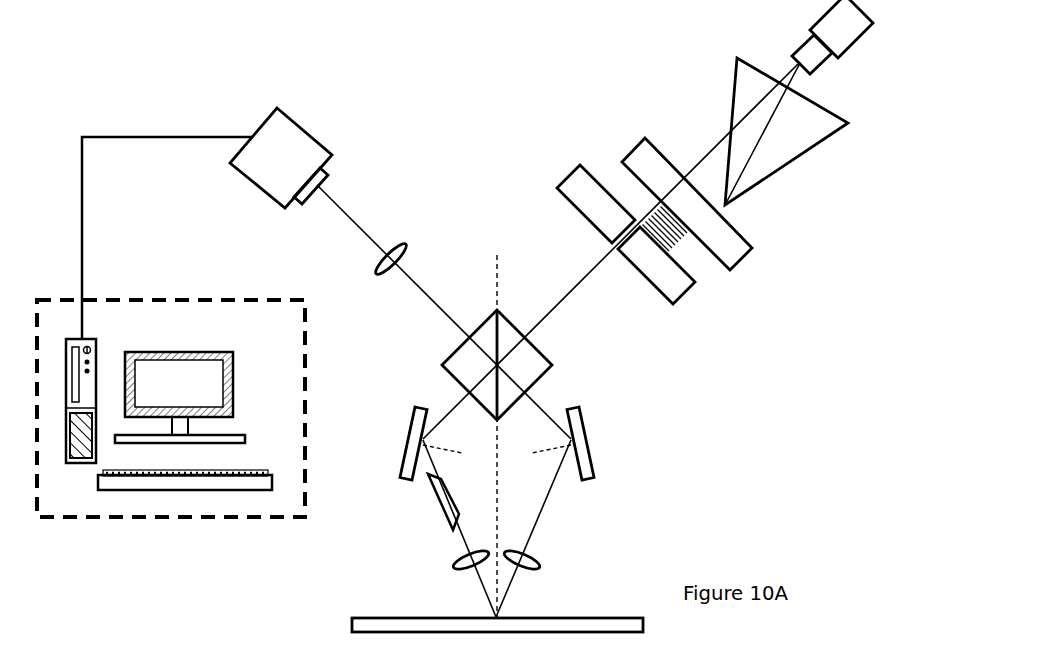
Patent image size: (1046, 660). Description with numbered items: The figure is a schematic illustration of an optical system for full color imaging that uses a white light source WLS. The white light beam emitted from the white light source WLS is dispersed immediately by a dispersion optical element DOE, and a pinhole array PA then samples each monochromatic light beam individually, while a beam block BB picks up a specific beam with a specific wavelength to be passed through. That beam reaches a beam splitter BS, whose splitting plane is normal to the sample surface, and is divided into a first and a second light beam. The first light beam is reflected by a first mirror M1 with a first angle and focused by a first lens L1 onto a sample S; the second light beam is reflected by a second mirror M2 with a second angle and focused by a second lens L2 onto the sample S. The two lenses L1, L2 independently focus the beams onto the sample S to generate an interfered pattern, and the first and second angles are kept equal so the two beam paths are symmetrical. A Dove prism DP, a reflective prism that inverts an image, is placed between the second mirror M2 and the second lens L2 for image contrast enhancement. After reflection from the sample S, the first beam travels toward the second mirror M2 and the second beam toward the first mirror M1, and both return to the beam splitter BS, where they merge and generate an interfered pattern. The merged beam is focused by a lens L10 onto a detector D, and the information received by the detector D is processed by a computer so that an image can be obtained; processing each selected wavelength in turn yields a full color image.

The white light source WLS is at (838, 37).
The dispersion optical element DOE is at (789, 131).
The pinhole array PA is at (680, 211).
The beam block BB is at (588, 198).
The detector D is at (207, 223).
The lens L10 is at (396, 249).
The beam splitter BS is at (497, 358).
The first mirror M1 is at (595, 443).
The second mirror M2 is at (398, 443).
The Dove prism DP is at (456, 502).
The first lens L1 is at (534, 562).
The second lens L2 is at (459, 562).
The sample S is at (497, 615).
The element computer is at (171, 408).